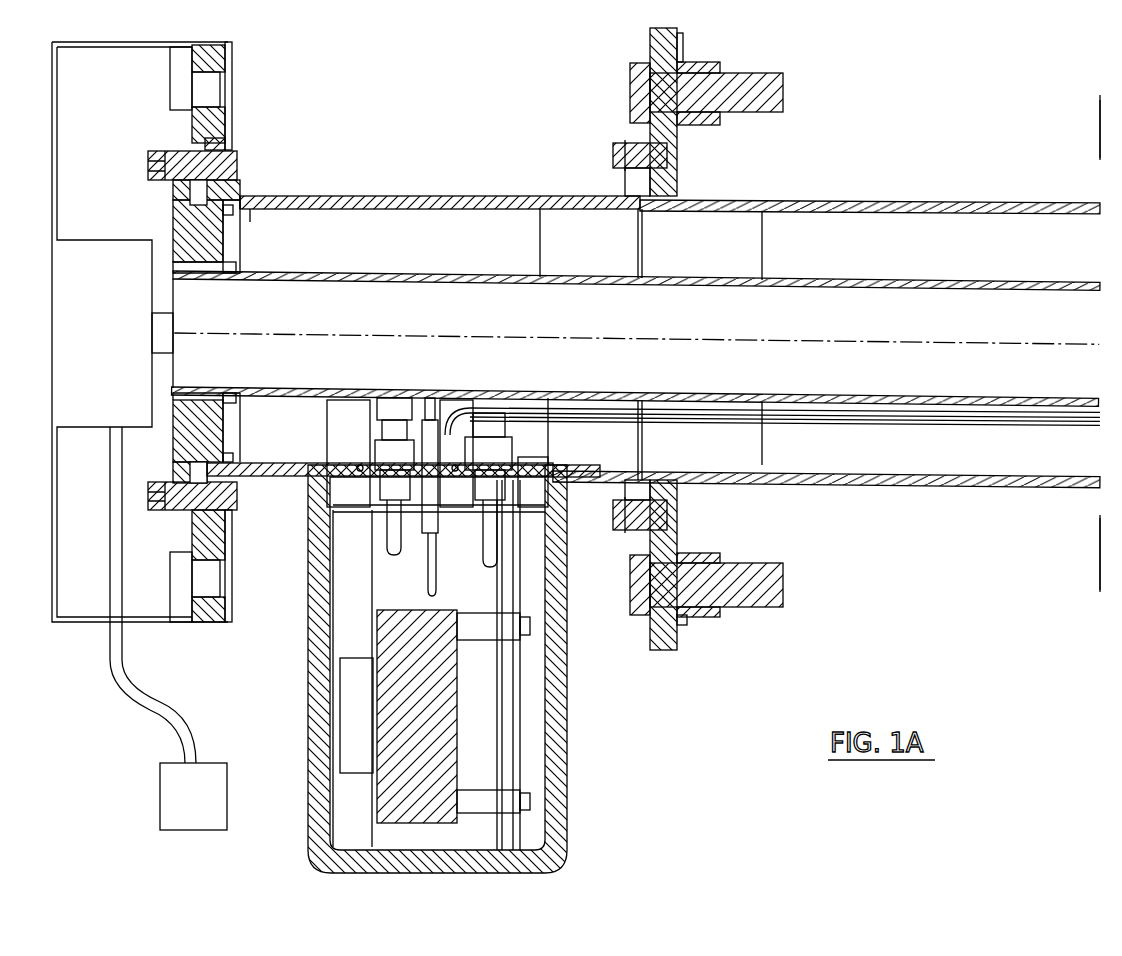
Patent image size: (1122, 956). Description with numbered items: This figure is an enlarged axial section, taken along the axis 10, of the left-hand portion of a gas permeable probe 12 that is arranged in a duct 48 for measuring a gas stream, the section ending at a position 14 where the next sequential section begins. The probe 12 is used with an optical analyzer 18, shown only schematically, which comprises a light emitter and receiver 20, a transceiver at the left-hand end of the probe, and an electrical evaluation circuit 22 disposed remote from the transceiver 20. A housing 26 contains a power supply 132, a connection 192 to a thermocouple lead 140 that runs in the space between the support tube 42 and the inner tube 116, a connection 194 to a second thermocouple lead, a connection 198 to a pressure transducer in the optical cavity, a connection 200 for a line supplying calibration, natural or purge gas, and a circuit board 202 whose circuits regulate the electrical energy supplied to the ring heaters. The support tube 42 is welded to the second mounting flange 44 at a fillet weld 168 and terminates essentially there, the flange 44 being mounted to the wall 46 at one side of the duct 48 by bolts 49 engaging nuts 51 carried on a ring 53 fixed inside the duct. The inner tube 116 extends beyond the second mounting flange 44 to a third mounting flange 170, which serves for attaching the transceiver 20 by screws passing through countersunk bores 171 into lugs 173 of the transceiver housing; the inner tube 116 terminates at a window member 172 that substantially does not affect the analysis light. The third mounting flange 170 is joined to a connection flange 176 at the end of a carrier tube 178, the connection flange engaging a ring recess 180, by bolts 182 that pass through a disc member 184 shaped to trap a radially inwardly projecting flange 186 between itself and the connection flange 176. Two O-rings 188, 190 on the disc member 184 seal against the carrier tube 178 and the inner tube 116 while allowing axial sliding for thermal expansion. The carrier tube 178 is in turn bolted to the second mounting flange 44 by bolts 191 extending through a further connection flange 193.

The axis 10 is at (883, 340).
The gas permeable probe 12 is at (958, 490).
The position 14 is at (1100, 105).
The optical analyzer 18 is at (106, 698).
The light emitter and receiver 20 is at (88, 240).
The electrical evaluation circuit 22 is at (228, 795).
The housing 26 is at (567, 790).
The support tube 42 is at (850, 203).
The second mounting flange 44 is at (661, 652).
The wall 46 is at (680, 630).
The duct 48 is at (990, 343).
The bolts 49 is at (632, 95).
The nuts 51 is at (712, 72).
The ring 53 is at (682, 55).
The inner tube 116 is at (847, 282).
The power supply 132 is at (398, 822).
The thermocouple lead 140 is at (838, 424).
The fillet weld 168 is at (644, 212).
The third mounting flange 170 is at (232, 46).
The countersunk bores 171 is at (232, 92).
The window member 172 is at (173, 328).
The lugs 173 is at (168, 88).
The connection flange 176 is at (226, 153).
The carrier tube 178 is at (355, 197).
The ring recess 180 is at (226, 126).
The bolts 182 is at (158, 151).
The disc member 184 is at (175, 220).
The radially inwardly projecting flange 186 is at (192, 548).
The O-ring 188 is at (236, 212).
The O-ring 190 is at (233, 273).
The bolts 191 is at (613, 152).
The connection 192 is at (438, 580).
The further connection flange 193 is at (625, 188).
The connection 194 is at (410, 556).
The connection 198 is at (375, 432).
The connection 200 is at (496, 437).
The circuit board 202 is at (525, 685).